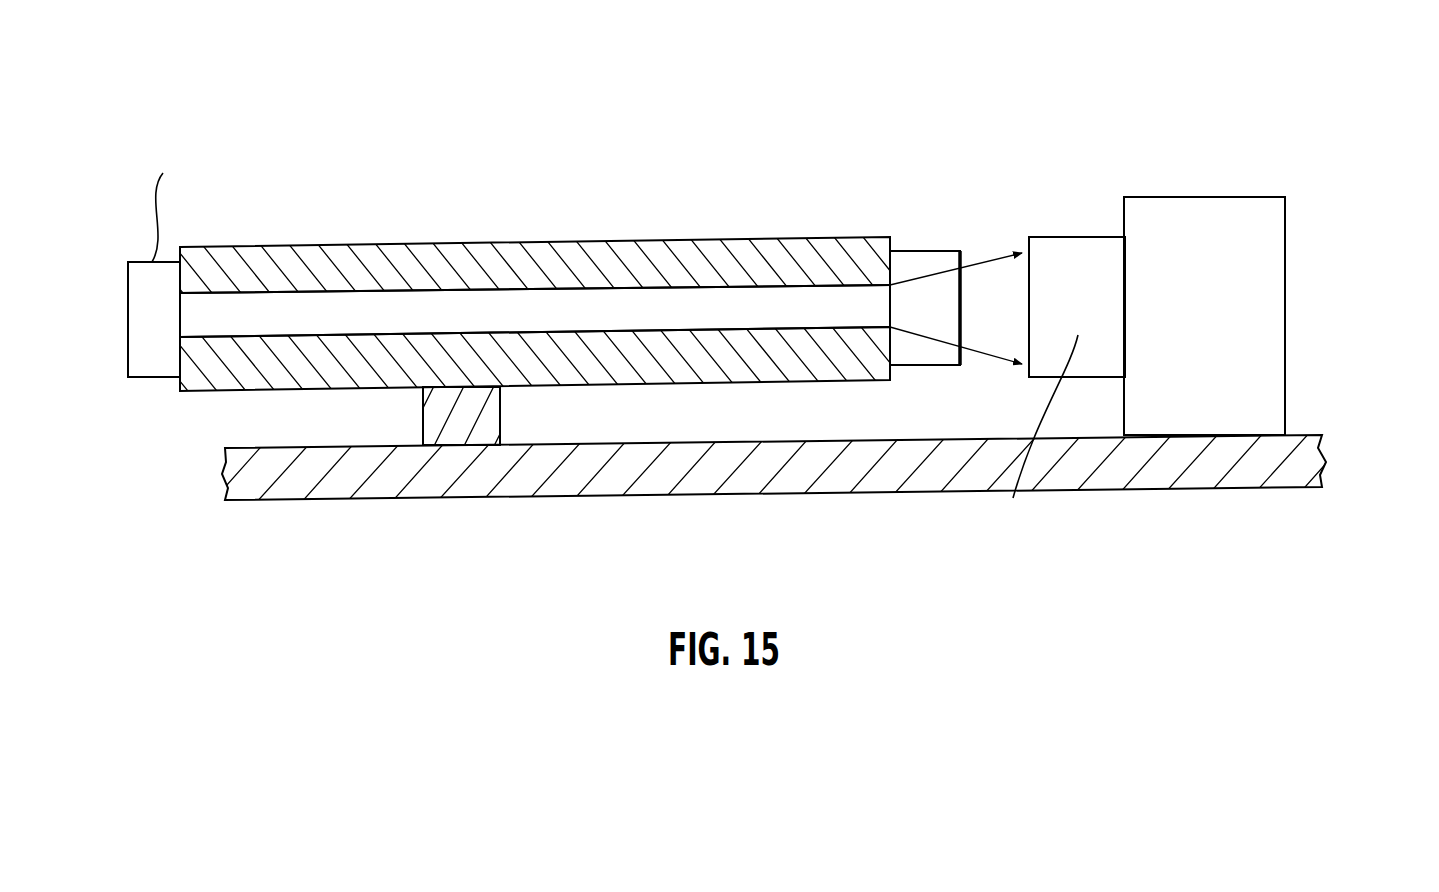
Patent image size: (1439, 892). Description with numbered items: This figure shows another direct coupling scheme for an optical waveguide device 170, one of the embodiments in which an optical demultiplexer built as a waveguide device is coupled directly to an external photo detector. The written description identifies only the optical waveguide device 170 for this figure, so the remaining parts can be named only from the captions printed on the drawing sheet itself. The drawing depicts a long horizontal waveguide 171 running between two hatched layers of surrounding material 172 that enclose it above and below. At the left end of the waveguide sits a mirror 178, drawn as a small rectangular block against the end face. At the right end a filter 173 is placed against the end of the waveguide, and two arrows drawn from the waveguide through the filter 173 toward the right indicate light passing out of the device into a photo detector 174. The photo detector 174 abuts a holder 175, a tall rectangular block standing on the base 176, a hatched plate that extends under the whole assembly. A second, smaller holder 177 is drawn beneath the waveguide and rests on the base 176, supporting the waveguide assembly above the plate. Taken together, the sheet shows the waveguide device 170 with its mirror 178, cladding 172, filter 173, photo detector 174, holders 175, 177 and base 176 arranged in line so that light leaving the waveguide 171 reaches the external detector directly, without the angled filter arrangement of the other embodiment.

The optical waveguide device 170 is at (1183, 78).
The waveguide 171 is at (645, 307).
The cladding 172 is at (490, 243).
The filter 173 is at (915, 248).
The photo detector 174 is at (1083, 235).
The holder 175 is at (1285, 250).
The base 176 is at (1322, 462).
The holder 177 is at (500, 422).
The mirror 178 is at (128, 337).